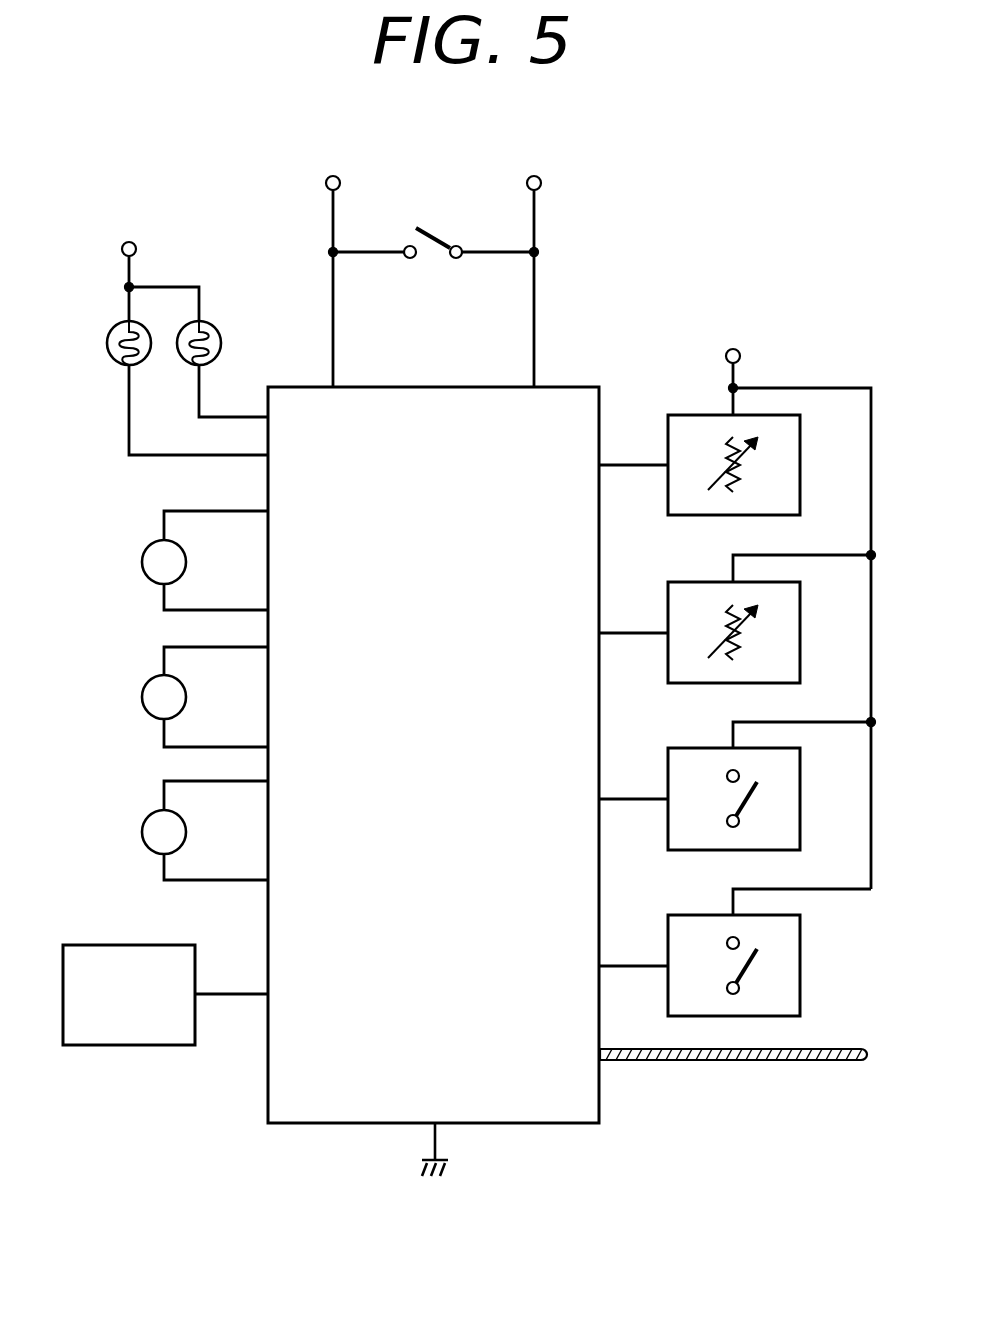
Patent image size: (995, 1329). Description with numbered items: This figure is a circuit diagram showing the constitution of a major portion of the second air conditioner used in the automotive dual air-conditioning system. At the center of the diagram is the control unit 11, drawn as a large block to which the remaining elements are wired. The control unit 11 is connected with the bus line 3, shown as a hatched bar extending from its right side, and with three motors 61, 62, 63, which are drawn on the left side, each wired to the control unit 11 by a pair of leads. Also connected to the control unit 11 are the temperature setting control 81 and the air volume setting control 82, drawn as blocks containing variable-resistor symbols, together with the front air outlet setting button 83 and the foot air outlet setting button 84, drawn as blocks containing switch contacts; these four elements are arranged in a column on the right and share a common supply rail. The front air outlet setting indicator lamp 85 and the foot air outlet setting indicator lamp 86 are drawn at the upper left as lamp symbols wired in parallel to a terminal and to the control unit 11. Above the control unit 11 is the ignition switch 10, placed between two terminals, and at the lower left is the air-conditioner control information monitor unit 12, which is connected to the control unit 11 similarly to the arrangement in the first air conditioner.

The bus line 3 is at (832, 1048).
The ignition switch 10 is at (433, 232).
The control unit 11 is at (567, 387).
The air-conditioner control information monitor unit 12 is at (153, 945).
The motor 61 is at (145, 549).
The motor 62 is at (145, 684).
The motor 63 is at (145, 819).
The temperature setting control 81 is at (802, 446).
The air volume setting control 82 is at (802, 614).
The front air outlet setting button 83 is at (802, 781).
The foot air outlet setting button 84 is at (802, 948).
The front air outlet setting indicator lamp 85 is at (216, 331).
The foot air outlet setting indicator lamp 86 is at (115, 329).